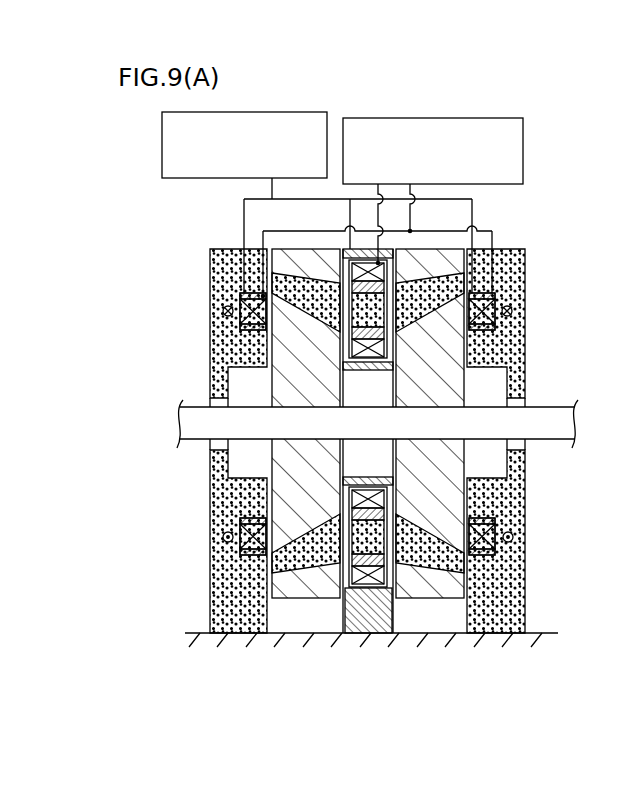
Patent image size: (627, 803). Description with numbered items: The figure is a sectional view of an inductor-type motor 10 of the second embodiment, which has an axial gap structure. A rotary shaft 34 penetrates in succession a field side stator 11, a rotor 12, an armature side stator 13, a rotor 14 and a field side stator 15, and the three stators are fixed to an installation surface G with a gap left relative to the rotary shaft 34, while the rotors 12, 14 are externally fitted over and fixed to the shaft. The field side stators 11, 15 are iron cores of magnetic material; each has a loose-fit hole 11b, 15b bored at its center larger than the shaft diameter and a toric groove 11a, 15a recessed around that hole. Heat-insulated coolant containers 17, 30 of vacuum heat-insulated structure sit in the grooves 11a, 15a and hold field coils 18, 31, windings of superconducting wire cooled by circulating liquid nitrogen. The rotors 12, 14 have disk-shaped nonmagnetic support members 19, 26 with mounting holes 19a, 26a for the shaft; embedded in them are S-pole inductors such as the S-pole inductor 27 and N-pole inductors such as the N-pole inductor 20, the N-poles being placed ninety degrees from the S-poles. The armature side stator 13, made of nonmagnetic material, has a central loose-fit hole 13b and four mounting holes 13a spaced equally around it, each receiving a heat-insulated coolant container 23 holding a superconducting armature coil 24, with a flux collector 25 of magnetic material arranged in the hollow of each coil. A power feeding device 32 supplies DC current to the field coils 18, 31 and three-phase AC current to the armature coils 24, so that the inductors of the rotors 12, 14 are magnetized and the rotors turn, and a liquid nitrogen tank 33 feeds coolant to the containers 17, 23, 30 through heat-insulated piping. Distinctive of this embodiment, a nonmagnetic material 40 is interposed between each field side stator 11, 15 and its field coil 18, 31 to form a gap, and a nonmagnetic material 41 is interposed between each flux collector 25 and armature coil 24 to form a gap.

The inductor-type motor 10 is at (148, 232).
The field side stator 11 is at (193, 441).
The groove 11a is at (233, 322).
The loose-fit hole 11b is at (207, 446).
The rotor 12 is at (244, 475).
The armature side stator 13 is at (382, 469).
The mounting hole 13a is at (372, 608).
The loose-fit hole 13b is at (298, 603).
The rotor 14 is at (499, 474).
The field side stator 15 is at (538, 441).
The groove 15a is at (497, 338).
The loose-fit hole 15b is at (512, 453).
The heat-insulated coolant container 17 is at (242, 295).
The field coil 18 is at (239, 308).
The support member 19 is at (293, 458).
The hole 19a is at (300, 404).
The N-pole inductor 20 is at (303, 305).
The heat-insulated coolant container 23 is at (352, 587).
The armature coil 24 is at (385, 590).
The flux collector 25 is at (398, 618).
The support member 26 is at (435, 385).
The hole 26a is at (435, 465).
The S-pole inductor 27 is at (438, 328).
The heat-insulated coolant container 30 is at (498, 293).
The field coil 31 is at (500, 322).
The power feeding device 32 is at (403, 118).
The liquid nitrogen tank 33 is at (280, 112).
The rotary shaft 34 is at (190, 425).
The nonmagnetic material 40 is at (248, 332).
The nonmagnetic material 41 is at (373, 327).
The installation surface G is at (197, 631).